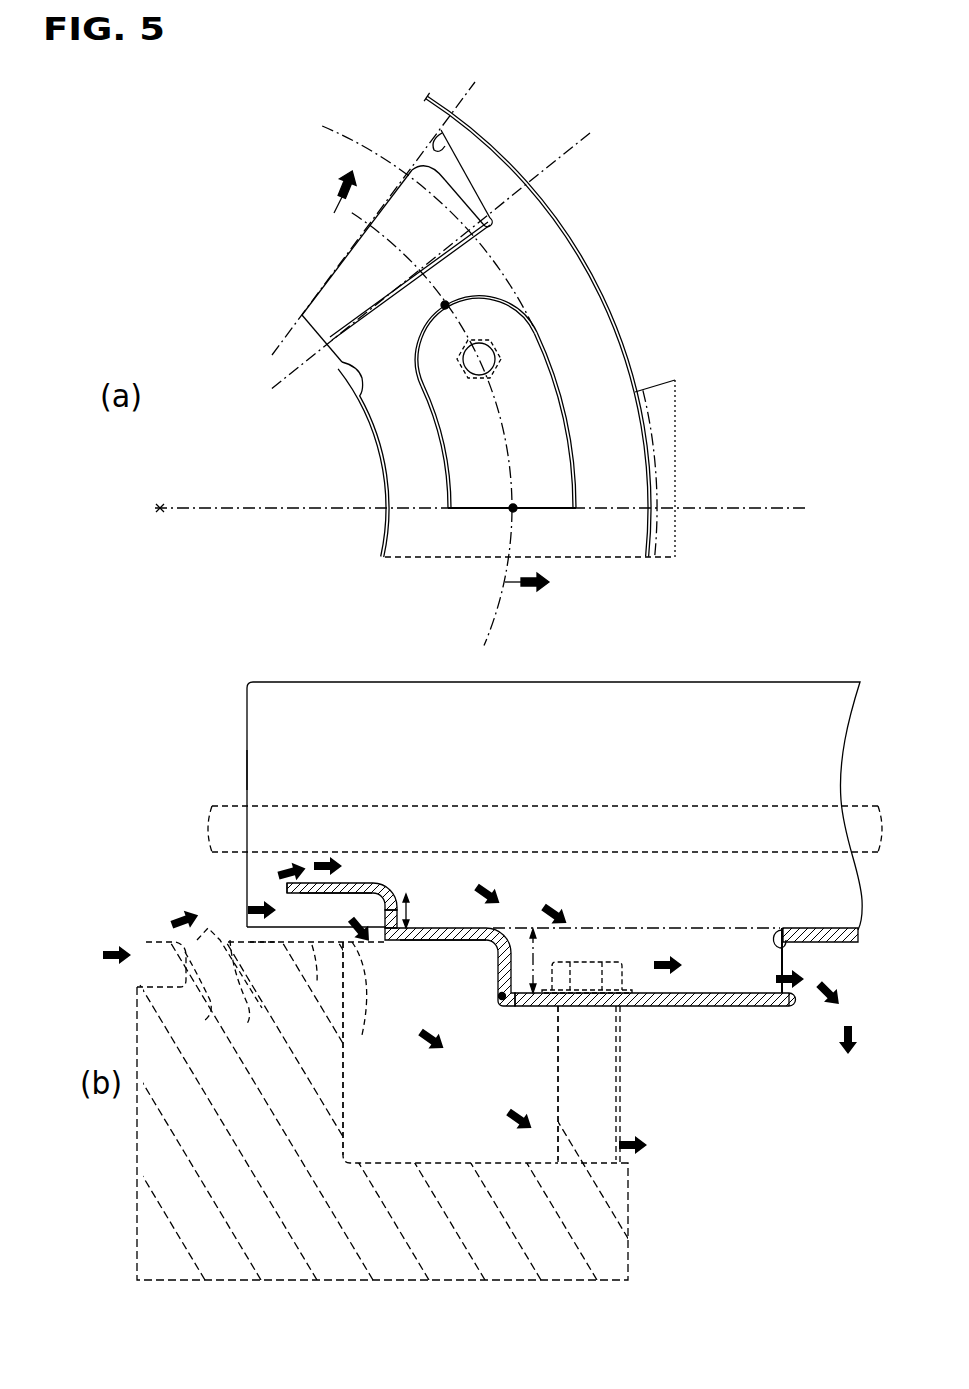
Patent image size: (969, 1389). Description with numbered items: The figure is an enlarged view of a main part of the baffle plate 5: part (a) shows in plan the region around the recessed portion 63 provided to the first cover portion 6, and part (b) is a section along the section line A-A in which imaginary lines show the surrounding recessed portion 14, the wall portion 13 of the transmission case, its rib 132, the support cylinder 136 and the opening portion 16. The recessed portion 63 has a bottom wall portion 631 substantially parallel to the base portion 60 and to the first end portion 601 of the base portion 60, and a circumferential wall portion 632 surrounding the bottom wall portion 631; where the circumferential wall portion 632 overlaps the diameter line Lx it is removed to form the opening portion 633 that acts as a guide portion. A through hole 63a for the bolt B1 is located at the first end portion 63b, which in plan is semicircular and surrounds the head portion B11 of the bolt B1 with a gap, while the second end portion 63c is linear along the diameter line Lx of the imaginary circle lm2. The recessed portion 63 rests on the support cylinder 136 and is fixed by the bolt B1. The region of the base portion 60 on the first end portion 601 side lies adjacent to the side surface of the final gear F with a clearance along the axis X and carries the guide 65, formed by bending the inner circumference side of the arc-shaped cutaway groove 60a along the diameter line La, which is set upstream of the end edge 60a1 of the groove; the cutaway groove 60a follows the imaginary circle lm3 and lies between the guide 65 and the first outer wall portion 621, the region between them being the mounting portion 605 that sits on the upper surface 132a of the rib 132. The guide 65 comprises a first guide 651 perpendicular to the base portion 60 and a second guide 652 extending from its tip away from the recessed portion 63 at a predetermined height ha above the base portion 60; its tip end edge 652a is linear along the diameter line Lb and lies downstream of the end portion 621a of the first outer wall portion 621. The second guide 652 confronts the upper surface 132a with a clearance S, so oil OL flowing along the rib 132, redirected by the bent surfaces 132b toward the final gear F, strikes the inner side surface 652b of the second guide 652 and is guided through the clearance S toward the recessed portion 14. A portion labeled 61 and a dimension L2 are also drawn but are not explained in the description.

The baffle plate 5 is at (242, 690).
The first cover portion 6 is at (654, 213).
The wall portion 13 is at (632, 1262).
The rib 132 is at (248, 975).
The upper surface 132a is at (218, 975).
The bent surface 132b is at (143, 940).
The support cylinder 136 is at (604, 1083).
The recessed portion 14 is at (440, 1161).
The opening portion 16 is at (859, 1116).
The base portion 60 is at (430, 560).
The cutaway groove 60a is at (489, 212).
The end edge 60a1 is at (536, 246).
The first end portion 601 is at (352, 368).
The mounting portion 605 is at (440, 147).
The inner wall 61 is at (381, 545).
The first outer wall portion 621 is at (596, 283).
The end portion 621a is at (424, 100).
The recessed portion 63 is at (499, 481).
The through hole 63a is at (480, 377).
The first end portion 63b is at (447, 304).
The second end portion 63c is at (516, 512).
The bottom wall portion 631 is at (500, 330).
The circumferential wall portion 632 is at (448, 470).
The opening portion 633 is at (776, 935).
The guide 65 is at (256, 283).
The first guide 651 is at (388, 897).
The second guide 652 is at (328, 288).
The tip end edge 652a is at (352, 250).
The inner side surface 652b is at (355, 900).
The bolt B1 is at (551, 748).
The head portion B11 is at (497, 356).
The A-A line A is at (429, 383).
The final gear F is at (797, 805).
The clearance S is at (312, 924).
The predetermined height ha is at (423, 910).
The length of bent portion L2 is at (500, 963).
The oil OL is at (262, 944).
The diameter line La is at (444, 248).
The diameter line Lb is at (388, 203).
The diameter line Lx is at (497, 510).
The imaginary circle lm2 is at (432, 440).
The imaginary circle lm3 is at (404, 213).
The axis X is at (158, 505).